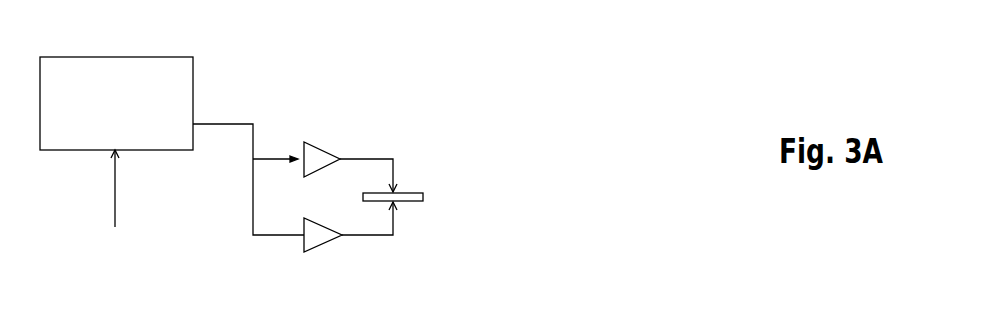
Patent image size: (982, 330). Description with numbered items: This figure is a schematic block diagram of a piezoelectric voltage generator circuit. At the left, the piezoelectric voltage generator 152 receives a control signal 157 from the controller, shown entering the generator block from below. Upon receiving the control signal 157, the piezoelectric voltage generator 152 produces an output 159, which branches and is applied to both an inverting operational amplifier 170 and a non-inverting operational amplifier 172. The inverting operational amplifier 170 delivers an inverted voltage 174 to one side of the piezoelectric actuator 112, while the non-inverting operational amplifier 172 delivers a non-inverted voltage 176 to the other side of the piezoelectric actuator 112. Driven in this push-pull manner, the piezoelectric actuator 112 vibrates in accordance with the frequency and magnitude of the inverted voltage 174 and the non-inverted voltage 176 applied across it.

The piezoelectric actuator 112 is at (418, 193).
The piezoelectric voltage generator 152 is at (122, 56).
The control signal 157 is at (113, 207).
The output 159 is at (228, 124).
The inverting operational amplifier 170 is at (317, 143).
The non-inverting operational amplifier 172 is at (315, 247).
The inverted voltage 174 is at (368, 158).
The non-inverted voltage 176 is at (358, 236).